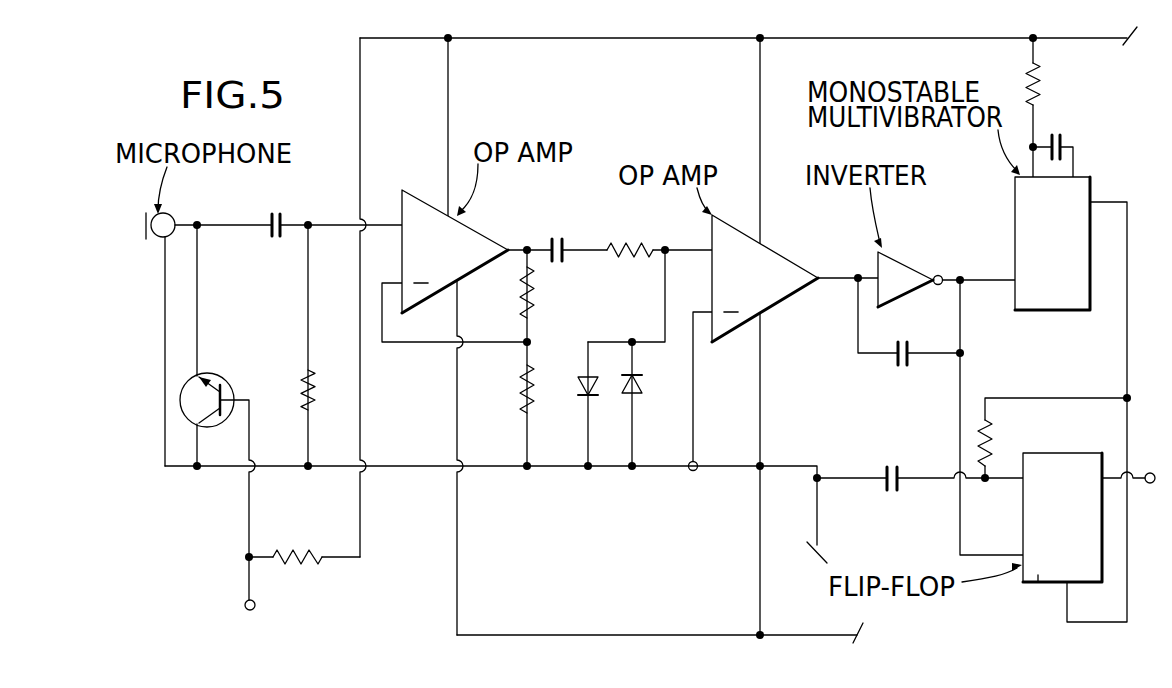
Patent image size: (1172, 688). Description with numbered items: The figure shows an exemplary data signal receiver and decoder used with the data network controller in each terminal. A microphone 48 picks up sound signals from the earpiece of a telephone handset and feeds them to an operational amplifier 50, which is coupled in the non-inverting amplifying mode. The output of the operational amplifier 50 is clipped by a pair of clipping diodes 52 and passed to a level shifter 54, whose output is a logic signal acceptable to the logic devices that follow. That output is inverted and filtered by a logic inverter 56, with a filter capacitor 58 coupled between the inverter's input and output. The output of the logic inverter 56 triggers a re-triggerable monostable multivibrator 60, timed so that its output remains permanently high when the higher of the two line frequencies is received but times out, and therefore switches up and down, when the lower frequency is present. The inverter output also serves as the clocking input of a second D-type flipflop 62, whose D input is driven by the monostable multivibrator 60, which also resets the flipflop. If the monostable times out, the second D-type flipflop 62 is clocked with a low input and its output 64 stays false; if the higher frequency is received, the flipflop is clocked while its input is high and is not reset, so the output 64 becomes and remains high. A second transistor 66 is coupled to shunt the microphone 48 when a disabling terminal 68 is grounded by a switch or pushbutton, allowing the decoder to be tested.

The microphone 48 is at (172, 215).
The operational amplifier 50 is at (473, 228).
The clipping diodes 52 is at (588, 397).
The level shifter 54 is at (778, 253).
The logic inverter 56 is at (915, 267).
The filter capacitor 58 is at (902, 357).
The re-triggerable monostable multivibrator 60 is at (1015, 193).
The second D-type flipflop 62 is at (1038, 583).
The output 64 is at (1148, 473).
The second transistor 66 is at (222, 382).
The disabling terminal 68 is at (245, 605).